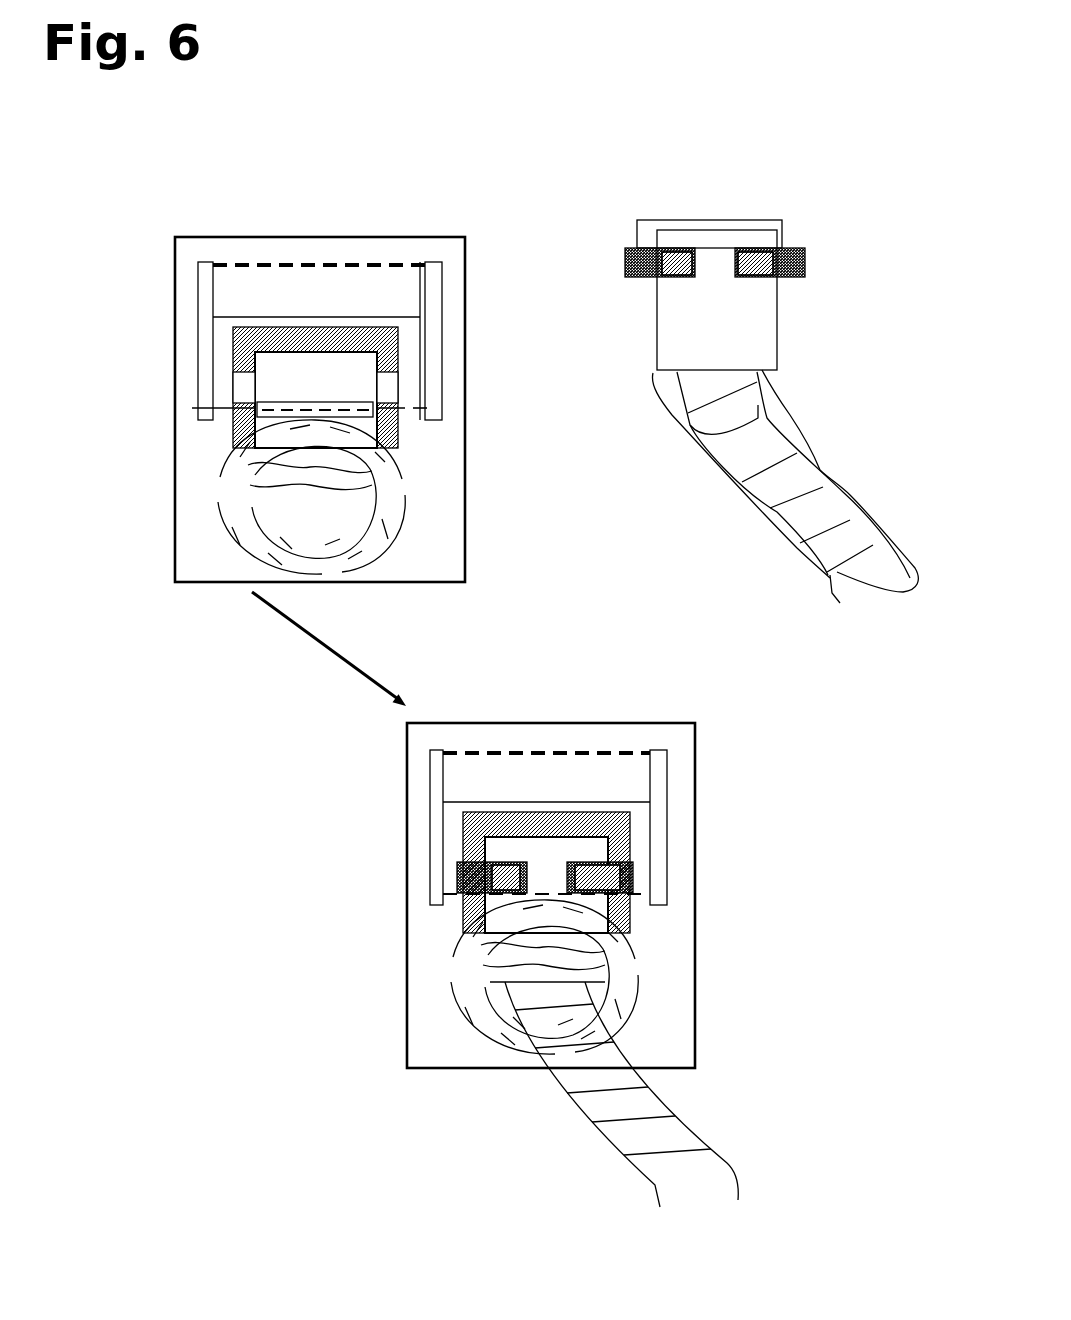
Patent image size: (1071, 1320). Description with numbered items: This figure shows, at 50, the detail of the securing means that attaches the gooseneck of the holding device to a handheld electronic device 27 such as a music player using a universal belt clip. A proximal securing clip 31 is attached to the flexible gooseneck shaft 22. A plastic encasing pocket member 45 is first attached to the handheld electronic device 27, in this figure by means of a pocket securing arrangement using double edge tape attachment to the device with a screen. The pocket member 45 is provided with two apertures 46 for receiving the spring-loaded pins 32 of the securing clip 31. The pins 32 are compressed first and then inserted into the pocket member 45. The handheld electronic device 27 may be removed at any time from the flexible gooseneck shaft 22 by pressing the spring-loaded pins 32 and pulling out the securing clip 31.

The proximal securing clip detail 50 is at (186, 192).
The apertures 46 is at (238, 384).
The pocket member 45 is at (256, 444).
The handheld electronic device 27 is at (452, 428).
The securing clip 31 is at (700, 320).
The spring-loaded pins 32 is at (625, 268).
The flexible gooseneck shaft 22 is at (724, 1136).